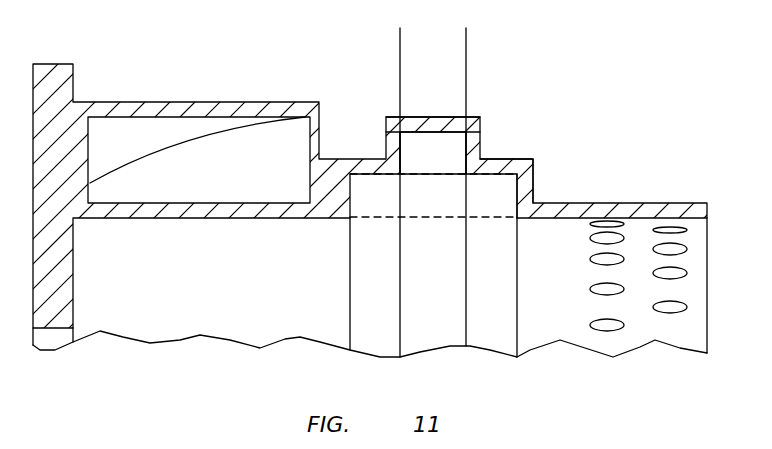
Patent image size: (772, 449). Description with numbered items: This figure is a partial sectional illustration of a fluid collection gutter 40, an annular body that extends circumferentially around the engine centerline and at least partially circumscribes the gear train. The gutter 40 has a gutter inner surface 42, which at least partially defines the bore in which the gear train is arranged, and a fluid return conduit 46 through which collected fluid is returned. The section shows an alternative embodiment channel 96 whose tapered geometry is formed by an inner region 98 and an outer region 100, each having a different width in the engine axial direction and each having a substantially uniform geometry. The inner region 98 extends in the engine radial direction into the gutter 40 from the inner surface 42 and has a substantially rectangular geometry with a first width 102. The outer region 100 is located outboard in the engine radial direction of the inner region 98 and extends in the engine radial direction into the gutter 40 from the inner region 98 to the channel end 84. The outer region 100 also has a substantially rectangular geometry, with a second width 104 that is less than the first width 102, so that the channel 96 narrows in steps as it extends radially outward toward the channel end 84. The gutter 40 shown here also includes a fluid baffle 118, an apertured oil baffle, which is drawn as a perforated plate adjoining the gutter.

The fluid collection gutter 40 is at (662, 79).
The gutter inner surface 42 is at (168, 221).
The fluid return conduit 46 is at (262, 142).
The channel end 84 is at (448, 117).
The channel 96 is at (370, 228).
The inner region 98 is at (503, 195).
The outer region 100 is at (455, 151).
The first width 102 is at (517, 323).
The second width 104 is at (343, 39).
The fluid baffle 118 is at (694, 203).